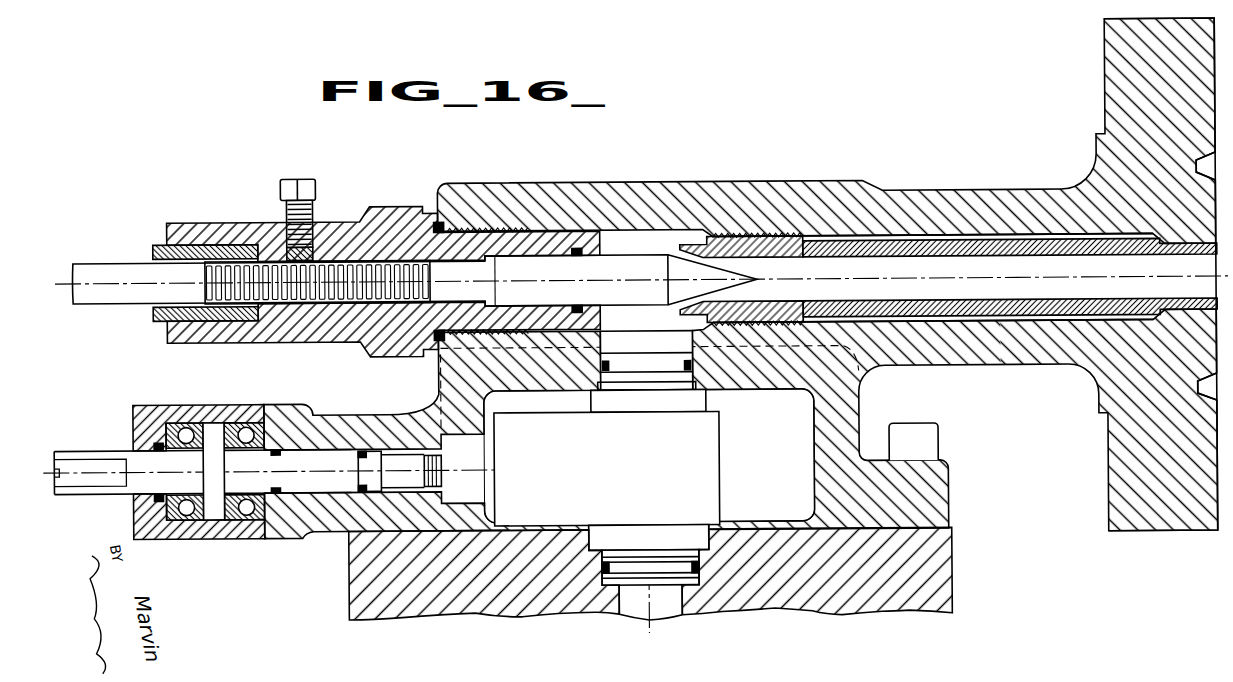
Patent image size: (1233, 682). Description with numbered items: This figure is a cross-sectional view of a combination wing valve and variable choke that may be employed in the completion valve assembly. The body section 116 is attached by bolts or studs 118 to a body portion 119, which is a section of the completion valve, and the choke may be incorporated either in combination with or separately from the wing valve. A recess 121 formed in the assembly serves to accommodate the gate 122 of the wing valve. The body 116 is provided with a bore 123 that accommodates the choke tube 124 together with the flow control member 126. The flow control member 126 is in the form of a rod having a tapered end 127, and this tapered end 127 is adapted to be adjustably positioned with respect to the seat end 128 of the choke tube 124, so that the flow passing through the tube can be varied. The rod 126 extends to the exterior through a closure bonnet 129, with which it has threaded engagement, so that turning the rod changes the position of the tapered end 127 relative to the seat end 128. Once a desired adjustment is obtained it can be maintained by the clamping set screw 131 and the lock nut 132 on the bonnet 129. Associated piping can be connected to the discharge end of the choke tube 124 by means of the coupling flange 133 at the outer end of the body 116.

The body section 116 is at (1004, 373).
The bolts or studs 118 is at (935, 447).
The body portion 119 is at (940, 555).
The recess 121 is at (807, 416).
The gate 122 is at (708, 458).
The bore 123 is at (967, 240).
The choke tube 124 is at (893, 250).
The flow control member 126 is at (615, 260).
The tapered end 127 is at (728, 278).
The seat end 128 is at (688, 247).
The closure bonnet 129 is at (387, 204).
The clamping set screw 131 is at (290, 176).
The lock nut 132 is at (205, 225).
The coupling flange 133 is at (1153, 530).